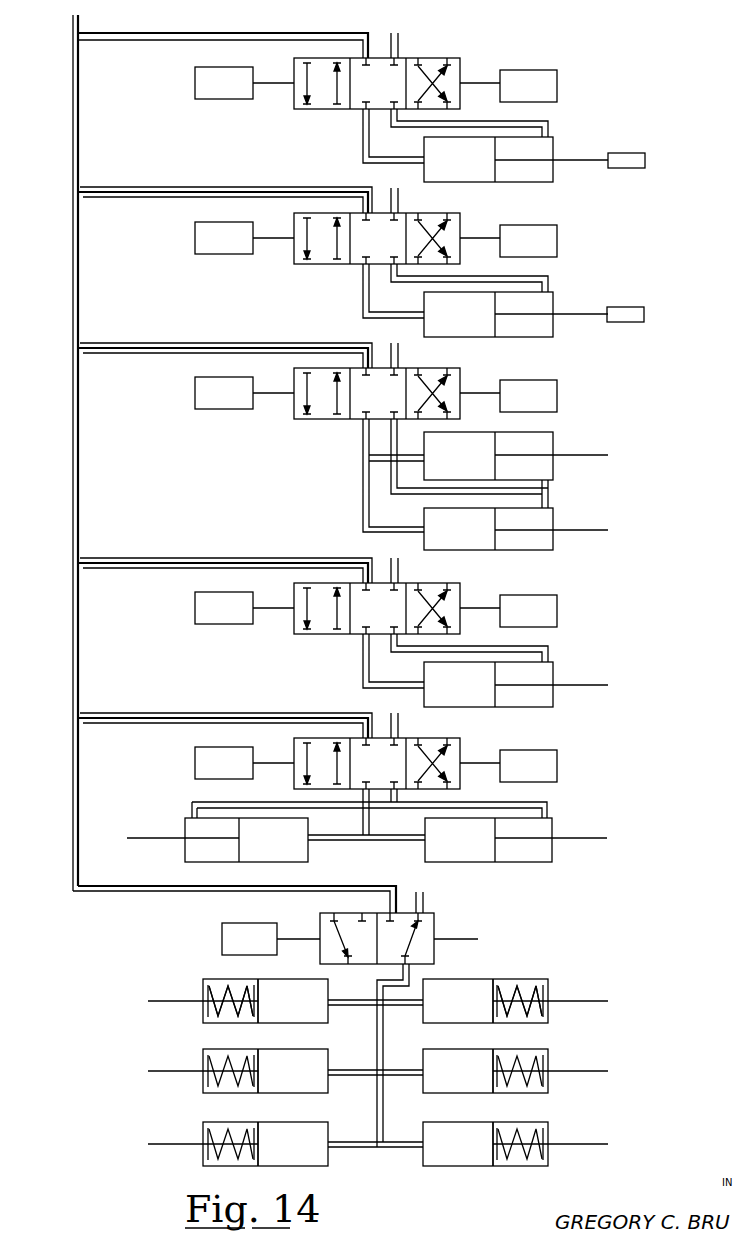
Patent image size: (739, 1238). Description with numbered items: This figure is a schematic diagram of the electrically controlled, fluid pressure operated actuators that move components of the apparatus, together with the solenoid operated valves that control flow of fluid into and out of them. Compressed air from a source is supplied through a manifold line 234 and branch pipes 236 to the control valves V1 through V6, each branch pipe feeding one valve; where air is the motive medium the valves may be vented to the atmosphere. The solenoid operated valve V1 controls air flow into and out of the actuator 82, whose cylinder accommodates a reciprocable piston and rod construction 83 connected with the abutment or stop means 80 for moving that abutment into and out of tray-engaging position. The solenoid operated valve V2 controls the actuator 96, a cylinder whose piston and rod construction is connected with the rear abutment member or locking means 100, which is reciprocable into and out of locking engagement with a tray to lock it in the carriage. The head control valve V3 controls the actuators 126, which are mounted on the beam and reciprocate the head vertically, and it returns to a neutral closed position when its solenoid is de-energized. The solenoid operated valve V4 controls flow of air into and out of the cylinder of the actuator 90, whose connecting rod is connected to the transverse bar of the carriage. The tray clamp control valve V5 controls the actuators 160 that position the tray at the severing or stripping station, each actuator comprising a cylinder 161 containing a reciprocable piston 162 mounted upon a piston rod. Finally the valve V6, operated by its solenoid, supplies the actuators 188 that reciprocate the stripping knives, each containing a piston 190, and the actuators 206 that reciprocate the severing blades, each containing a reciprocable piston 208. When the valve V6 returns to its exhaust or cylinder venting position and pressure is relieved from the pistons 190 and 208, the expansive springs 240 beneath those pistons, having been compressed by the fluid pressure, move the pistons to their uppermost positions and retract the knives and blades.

The manifold line 234 is at (73, 100).
The branch pipes 236 is at (178, 39).
The solenoid operated valve V1 is at (416, 52).
The solenoid operated valve V2 is at (327, 270).
The head control valve V3 is at (335, 425).
The solenoid operated valve V4 is at (335, 640).
The tray clamp control valve V5 is at (434, 736).
The valve V6 is at (440, 919).
The abutment or stop means 80 is at (642, 153).
The fluid operated actuator 82 is at (464, 171).
The piston and rod construction 83 is at (496, 168).
The fluid-operated actuator 96 is at (464, 326).
The rear abutment member or locking means 100 is at (643, 307).
The actuators 126 is at (560, 441).
The fluid-operated actuator 90 is at (556, 707).
The fluid operated actuators 160 is at (182, 816).
The cylinder 161 is at (300, 862).
The piston 162 is at (240, 848).
The fluid operated actuator 188 is at (208, 975).
The piston 190 is at (258, 1012).
The fluid operated actuators 206 is at (208, 1118).
The piston 208 is at (258, 1156).
The expansive springs 240 is at (205, 988).